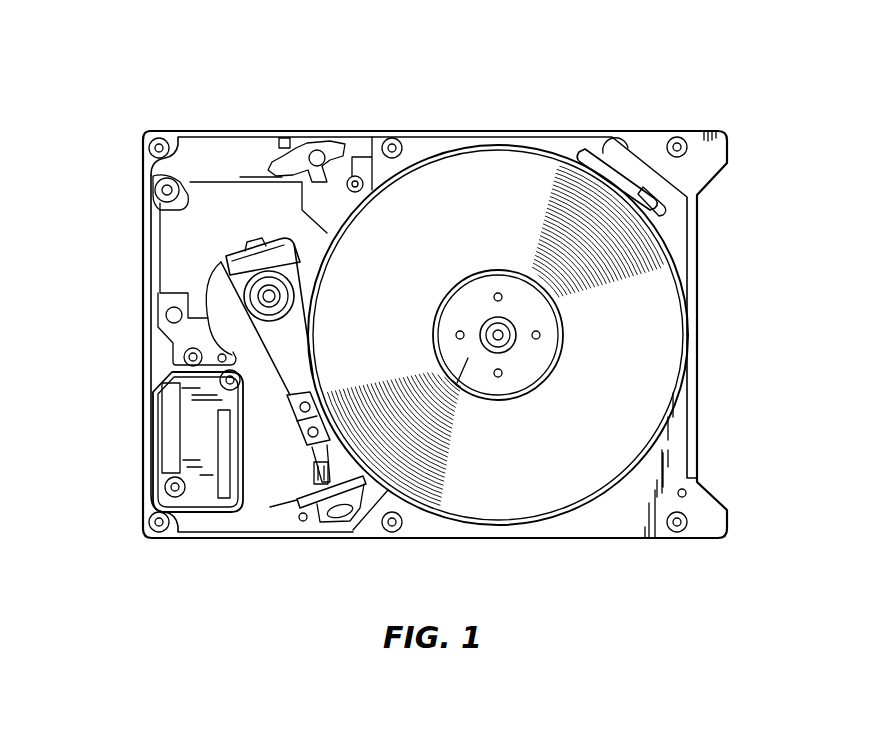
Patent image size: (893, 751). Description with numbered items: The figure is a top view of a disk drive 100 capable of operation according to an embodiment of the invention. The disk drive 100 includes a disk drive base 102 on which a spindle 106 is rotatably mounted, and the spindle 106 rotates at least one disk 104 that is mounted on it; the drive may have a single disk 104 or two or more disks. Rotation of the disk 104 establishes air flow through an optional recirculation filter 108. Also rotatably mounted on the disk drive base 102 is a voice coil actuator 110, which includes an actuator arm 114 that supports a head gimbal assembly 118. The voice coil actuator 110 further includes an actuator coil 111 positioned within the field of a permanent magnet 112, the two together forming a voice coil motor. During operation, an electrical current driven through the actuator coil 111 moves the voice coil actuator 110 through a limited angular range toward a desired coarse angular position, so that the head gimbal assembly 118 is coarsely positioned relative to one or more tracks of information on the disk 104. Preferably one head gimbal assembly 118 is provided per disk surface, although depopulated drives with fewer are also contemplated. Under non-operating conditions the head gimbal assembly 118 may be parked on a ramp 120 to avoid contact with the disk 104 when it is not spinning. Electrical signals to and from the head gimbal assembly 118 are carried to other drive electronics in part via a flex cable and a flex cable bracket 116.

The disk drive 100 is at (238, 95).
The disk drive base 102 is at (688, 433).
The disk 104 is at (496, 224).
The spindle 106 is at (533, 362).
The recirculation filter 108 is at (617, 172).
The voice coil actuator 110 is at (288, 265).
The actuator coil 111 is at (258, 244).
The permanent magnet 112 is at (177, 274).
The actuator arm 114 is at (303, 392).
The flex cable bracket 116 is at (197, 440).
The head gimbal assembly 118 is at (313, 462).
The ramp 120 is at (318, 517).